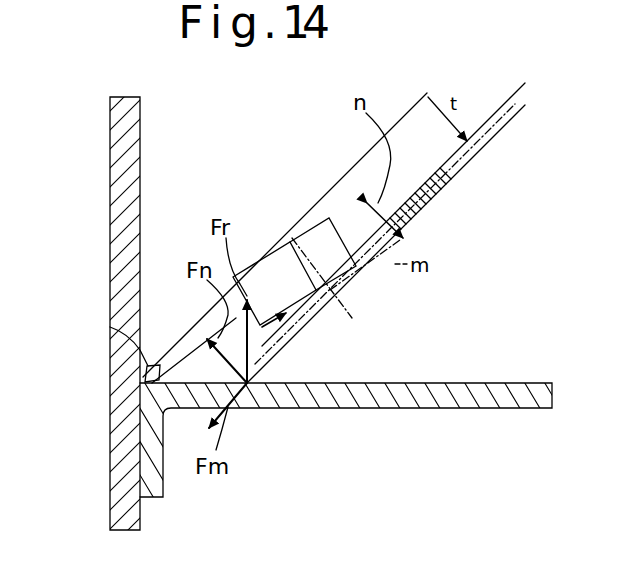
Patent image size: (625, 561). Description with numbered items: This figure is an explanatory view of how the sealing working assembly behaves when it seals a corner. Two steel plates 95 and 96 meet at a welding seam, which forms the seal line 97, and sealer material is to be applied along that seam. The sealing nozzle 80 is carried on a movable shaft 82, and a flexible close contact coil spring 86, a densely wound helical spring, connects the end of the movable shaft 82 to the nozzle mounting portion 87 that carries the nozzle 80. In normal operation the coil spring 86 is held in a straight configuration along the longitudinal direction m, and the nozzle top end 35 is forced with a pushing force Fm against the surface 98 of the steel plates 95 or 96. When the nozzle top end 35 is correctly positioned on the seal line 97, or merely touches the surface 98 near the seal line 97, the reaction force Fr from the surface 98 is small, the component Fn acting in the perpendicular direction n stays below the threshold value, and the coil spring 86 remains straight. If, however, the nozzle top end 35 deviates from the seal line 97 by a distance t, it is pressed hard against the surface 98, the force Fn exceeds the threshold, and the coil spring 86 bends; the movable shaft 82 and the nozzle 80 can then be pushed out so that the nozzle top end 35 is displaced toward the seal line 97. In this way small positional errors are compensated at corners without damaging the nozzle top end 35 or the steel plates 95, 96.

The nozzle top end 35 is at (110, 327).
The sealing nozzle 80 is at (172, 348).
The movable shaft 82 is at (462, 168).
The close contact coil spring 86 is at (425, 206).
The nozzle mounting portion 87 is at (264, 255).
The steel plate 95 is at (122, 160).
The steel plate 96 is at (457, 398).
The welding seam 97 is at (145, 382).
The surface 98 is at (135, 202).